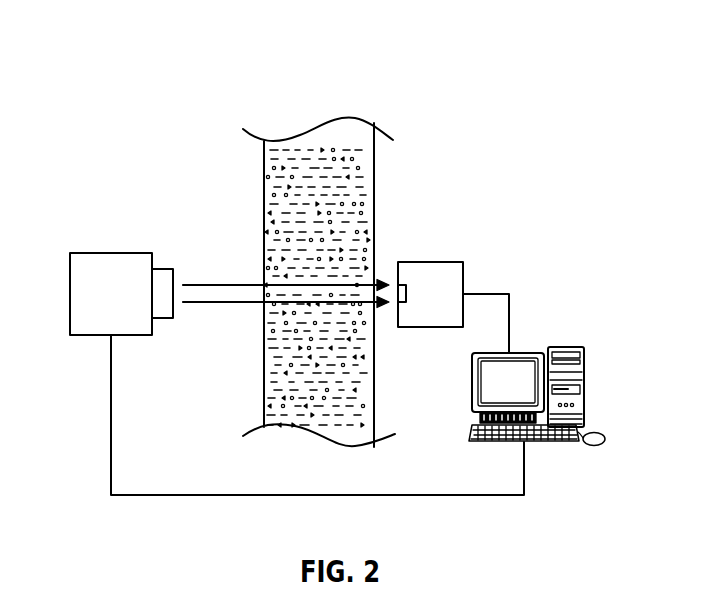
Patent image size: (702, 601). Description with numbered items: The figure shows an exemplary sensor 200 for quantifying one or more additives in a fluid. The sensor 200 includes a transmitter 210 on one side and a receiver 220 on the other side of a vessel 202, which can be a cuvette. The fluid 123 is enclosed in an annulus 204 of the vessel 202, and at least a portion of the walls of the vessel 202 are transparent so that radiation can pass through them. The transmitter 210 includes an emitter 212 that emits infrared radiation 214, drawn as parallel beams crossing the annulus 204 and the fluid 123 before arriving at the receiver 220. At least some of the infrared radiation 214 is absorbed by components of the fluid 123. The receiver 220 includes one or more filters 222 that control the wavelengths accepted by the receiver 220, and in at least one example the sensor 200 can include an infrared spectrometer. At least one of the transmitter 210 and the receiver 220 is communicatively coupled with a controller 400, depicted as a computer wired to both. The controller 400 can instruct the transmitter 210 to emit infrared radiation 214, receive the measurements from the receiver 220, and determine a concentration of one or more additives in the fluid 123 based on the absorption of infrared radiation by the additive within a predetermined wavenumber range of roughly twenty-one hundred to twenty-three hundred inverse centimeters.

The sensor 200 is at (84, 51).
The fluid 123 is at (325, 104).
The vessel 202 is at (374, 153).
The annulus 204 is at (358, 189).
The transmitter 210 is at (86, 244).
The emitter 212 is at (163, 268).
The infrared radiation 214 is at (276, 283).
The receiver 220 is at (456, 250).
The filters 222 is at (406, 293).
The controller 400 is at (598, 325).